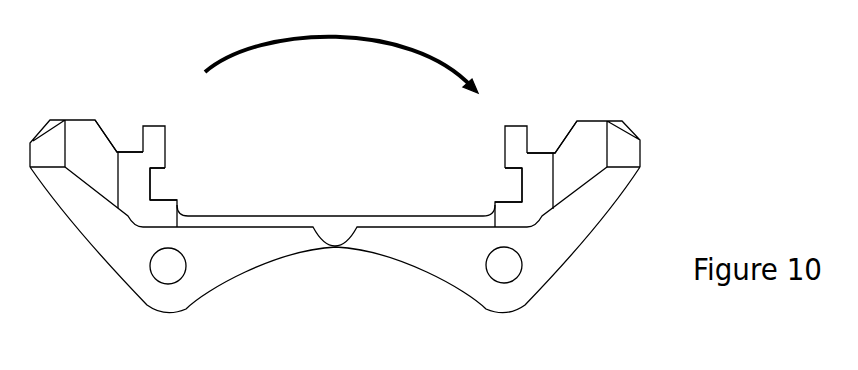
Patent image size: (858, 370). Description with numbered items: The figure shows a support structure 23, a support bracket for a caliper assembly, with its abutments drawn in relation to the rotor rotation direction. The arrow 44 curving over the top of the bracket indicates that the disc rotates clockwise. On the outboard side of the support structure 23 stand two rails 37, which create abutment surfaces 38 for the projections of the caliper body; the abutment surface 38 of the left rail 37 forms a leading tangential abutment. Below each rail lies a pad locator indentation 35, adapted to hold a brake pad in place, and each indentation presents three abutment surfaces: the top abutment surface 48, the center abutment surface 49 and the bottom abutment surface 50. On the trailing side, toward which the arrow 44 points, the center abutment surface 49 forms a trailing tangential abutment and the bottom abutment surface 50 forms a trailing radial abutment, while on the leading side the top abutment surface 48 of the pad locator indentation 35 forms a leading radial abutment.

The support structure 23 is at (575, 252).
The pad locator indentation 35 is at (156, 190).
The rail 37 is at (165, 127).
The abutment surface 38 is at (143, 126).
The arrow 44 is at (341, 46).
The top abutment surface 48 is at (163, 167).
The center abutment surface 49 is at (153, 185).
The bottom abutment surface 50 is at (176, 200).